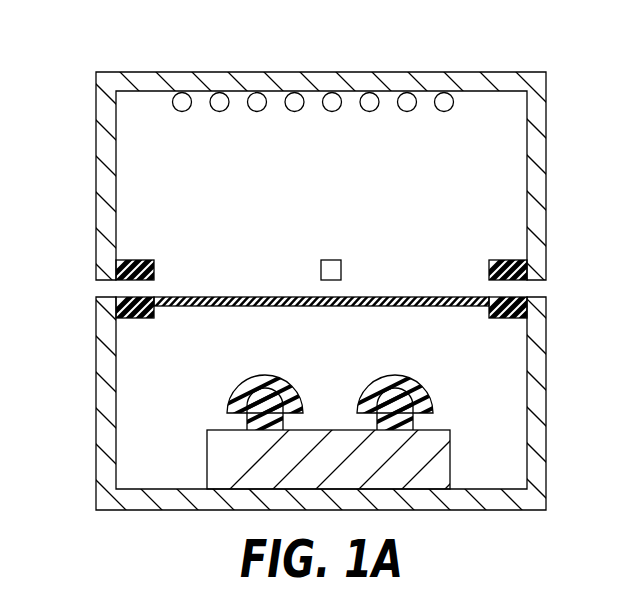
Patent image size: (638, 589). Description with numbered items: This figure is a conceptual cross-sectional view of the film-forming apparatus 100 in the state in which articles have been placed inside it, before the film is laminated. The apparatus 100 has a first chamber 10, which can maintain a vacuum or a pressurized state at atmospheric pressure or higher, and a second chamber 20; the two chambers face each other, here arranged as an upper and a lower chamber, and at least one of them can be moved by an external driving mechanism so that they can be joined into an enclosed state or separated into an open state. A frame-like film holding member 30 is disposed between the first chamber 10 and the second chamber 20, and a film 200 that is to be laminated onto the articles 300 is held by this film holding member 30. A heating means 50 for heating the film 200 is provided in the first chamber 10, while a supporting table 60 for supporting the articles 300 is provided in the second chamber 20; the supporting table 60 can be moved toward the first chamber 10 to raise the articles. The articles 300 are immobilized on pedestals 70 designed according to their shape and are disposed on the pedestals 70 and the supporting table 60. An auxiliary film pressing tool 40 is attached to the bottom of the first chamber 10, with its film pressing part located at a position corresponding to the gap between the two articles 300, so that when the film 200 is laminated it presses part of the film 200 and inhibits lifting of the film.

The film-forming apparatus 100 is at (181, 53).
The first chamber 10 is at (508, 133).
The heating means 50 is at (443, 92).
The auxiliary film pressing tool 40 is at (334, 268).
The second chamber 20 is at (506, 356).
The film holding member 30 is at (525, 308).
The film 200 is at (168, 312).
The articles 300 is at (314, 417).
The pedestals 70 is at (412, 405).
The supporting table 60 is at (437, 460).